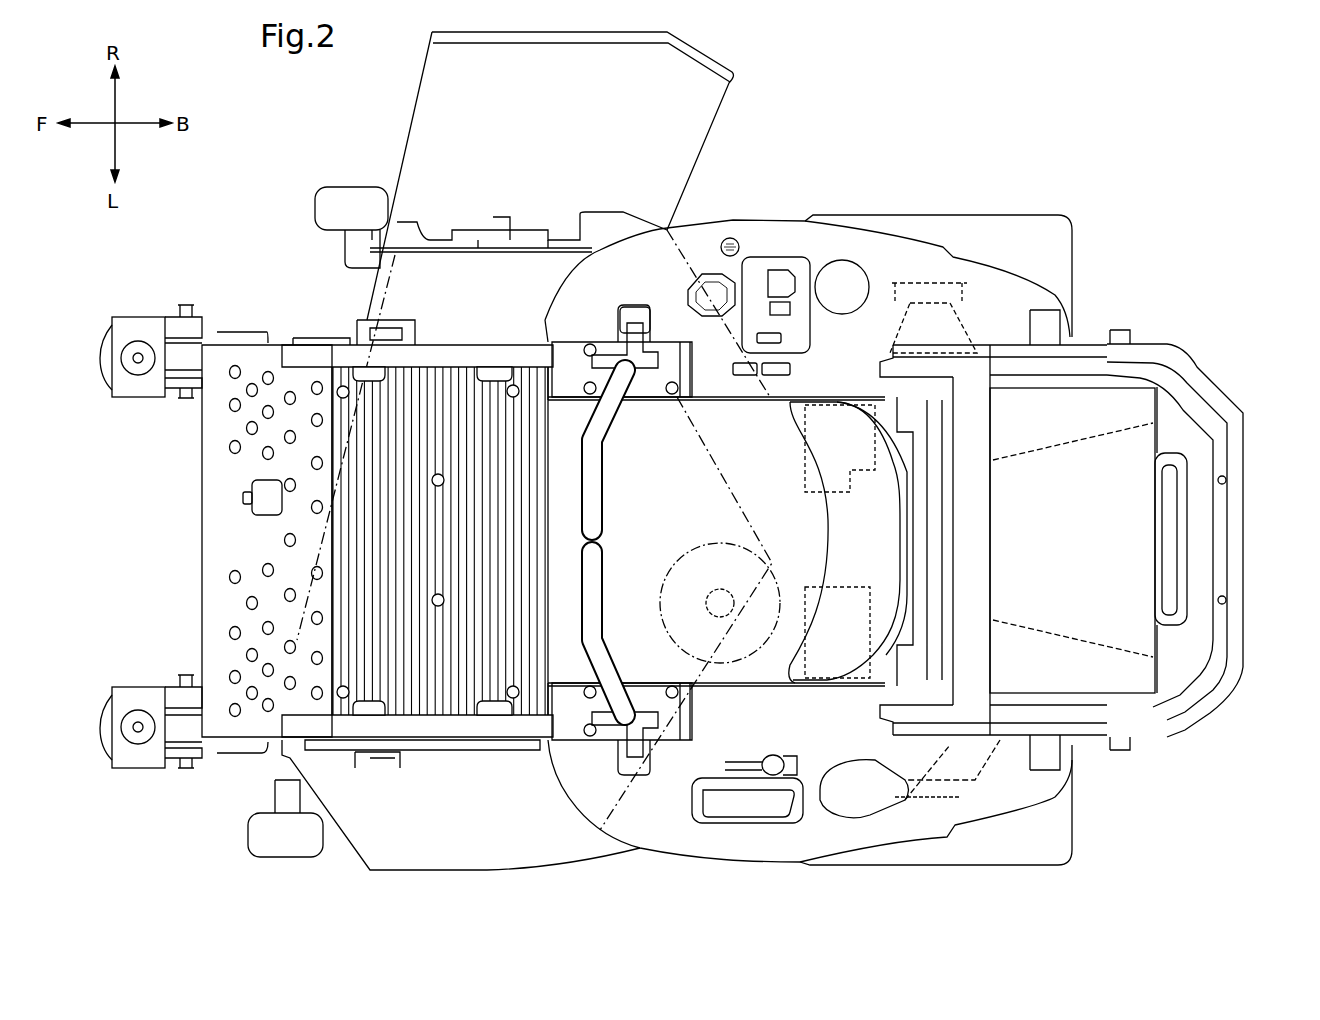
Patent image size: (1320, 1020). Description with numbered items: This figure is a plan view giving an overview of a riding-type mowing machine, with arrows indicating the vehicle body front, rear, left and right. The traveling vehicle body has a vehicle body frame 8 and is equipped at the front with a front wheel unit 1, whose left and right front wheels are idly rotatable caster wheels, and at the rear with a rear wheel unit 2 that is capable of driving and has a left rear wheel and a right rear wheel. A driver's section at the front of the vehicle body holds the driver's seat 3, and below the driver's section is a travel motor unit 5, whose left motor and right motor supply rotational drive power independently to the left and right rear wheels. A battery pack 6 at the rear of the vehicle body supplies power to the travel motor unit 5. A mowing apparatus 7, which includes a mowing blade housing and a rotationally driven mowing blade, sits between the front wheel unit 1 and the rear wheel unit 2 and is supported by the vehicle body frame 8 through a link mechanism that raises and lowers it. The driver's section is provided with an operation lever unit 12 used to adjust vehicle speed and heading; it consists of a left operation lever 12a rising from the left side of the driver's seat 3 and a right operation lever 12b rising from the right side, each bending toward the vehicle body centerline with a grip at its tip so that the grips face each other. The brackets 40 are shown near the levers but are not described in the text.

The front wheel unit 1 is at (228, 338).
The rear wheel unit 2 is at (1005, 245).
The driver's seat 3 is at (630, 453).
The travel motor unit 5 is at (807, 468).
The battery pack 6 is at (1156, 541).
The mowing apparatus 7 is at (385, 832).
The vehicle body frame 8 is at (322, 340).
The operation lever unit 12 is at (653, 542).
The left operation lever 12a is at (598, 575).
The right operation lever 12b is at (598, 495).
The lever bracket 40 is at (668, 358).